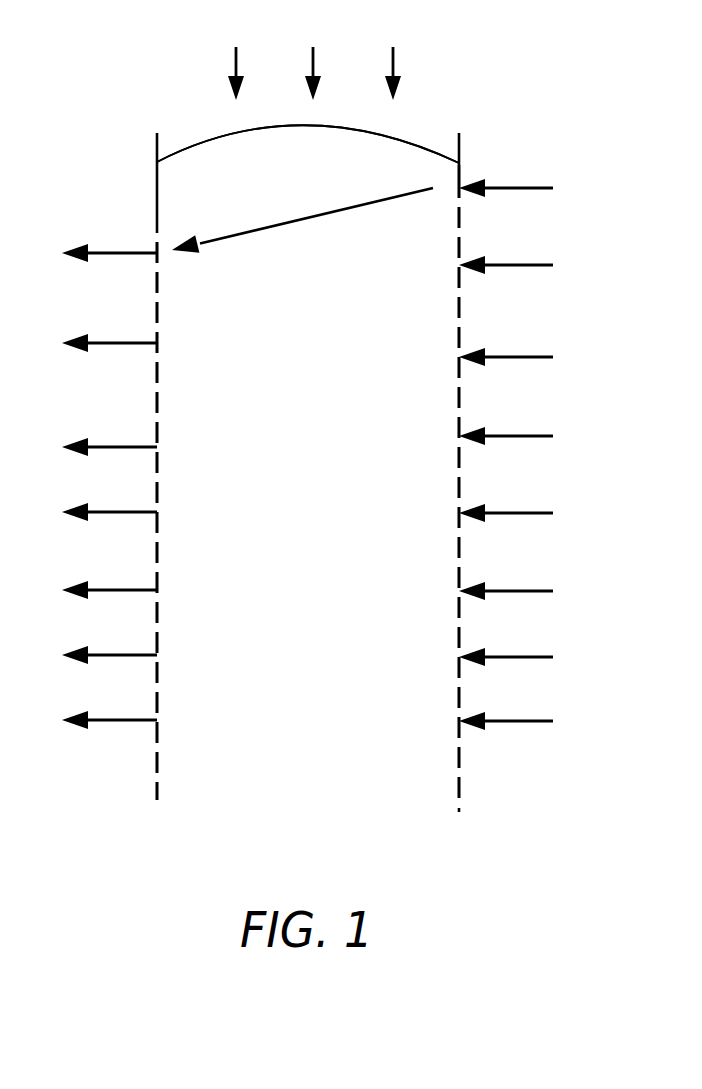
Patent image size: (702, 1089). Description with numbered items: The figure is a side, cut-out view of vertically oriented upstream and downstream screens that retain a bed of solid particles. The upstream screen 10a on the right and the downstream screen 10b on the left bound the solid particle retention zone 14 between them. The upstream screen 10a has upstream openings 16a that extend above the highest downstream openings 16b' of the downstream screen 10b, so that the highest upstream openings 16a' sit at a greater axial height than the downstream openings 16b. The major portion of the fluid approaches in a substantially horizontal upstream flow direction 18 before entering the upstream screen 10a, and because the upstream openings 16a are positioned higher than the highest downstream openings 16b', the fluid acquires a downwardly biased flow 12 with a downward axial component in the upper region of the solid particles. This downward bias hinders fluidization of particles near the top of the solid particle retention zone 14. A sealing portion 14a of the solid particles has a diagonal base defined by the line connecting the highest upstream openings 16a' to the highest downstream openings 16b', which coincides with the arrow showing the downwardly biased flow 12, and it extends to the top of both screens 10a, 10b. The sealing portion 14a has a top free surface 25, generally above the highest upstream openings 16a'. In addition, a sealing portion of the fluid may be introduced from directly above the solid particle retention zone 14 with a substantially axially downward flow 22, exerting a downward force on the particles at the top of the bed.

The upstream screen 10a is at (459, 150).
The downstream screen 10b is at (157, 150).
The downwardly biased flow 12 is at (300, 220).
The solid particle retention zone 14 is at (323, 495).
The sealing portion 14a is at (308, 190).
The upstream openings 16a is at (467, 474).
The highest upstream openings 16a' is at (406, 177).
The downstream openings 16b is at (149, 531).
The highest downstream openings 16b' is at (137, 222).
The upstream flow direction 18 is at (532, 188).
The substantially axially downward flow 22 is at (236, 57).
The top free surface 25 is at (410, 143).